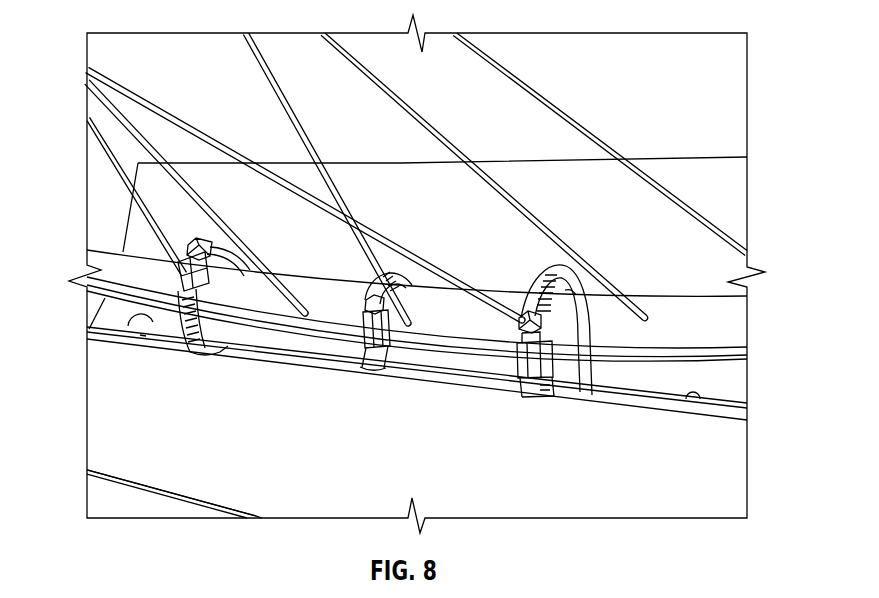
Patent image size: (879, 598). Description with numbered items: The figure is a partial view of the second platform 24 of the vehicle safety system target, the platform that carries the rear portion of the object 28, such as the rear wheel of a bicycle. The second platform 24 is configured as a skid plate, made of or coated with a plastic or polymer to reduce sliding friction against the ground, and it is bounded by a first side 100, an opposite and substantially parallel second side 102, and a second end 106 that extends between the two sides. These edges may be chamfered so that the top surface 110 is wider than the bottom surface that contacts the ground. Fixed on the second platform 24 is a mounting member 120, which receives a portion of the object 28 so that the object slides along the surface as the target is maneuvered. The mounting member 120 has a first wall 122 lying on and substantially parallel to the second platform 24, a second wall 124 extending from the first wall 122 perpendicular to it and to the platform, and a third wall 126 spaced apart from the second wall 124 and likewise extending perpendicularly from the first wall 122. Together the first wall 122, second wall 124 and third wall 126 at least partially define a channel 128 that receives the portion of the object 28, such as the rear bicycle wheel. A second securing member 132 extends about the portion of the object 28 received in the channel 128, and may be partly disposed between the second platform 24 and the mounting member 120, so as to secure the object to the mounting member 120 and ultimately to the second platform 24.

The second platform 24 is at (421, 395).
The object 28 is at (732, 363).
The first side 100 is at (160, 490).
The second side 102 is at (362, 163).
The second end 106 is at (123, 230).
The top surface 110 is at (113, 465).
The mounting member 120 is at (100, 342).
The first wall 122 is at (735, 392).
The second wall 124 is at (684, 401).
The third wall 126 is at (490, 293).
The channel 128 is at (615, 377).
The second securing member 132 is at (198, 352).